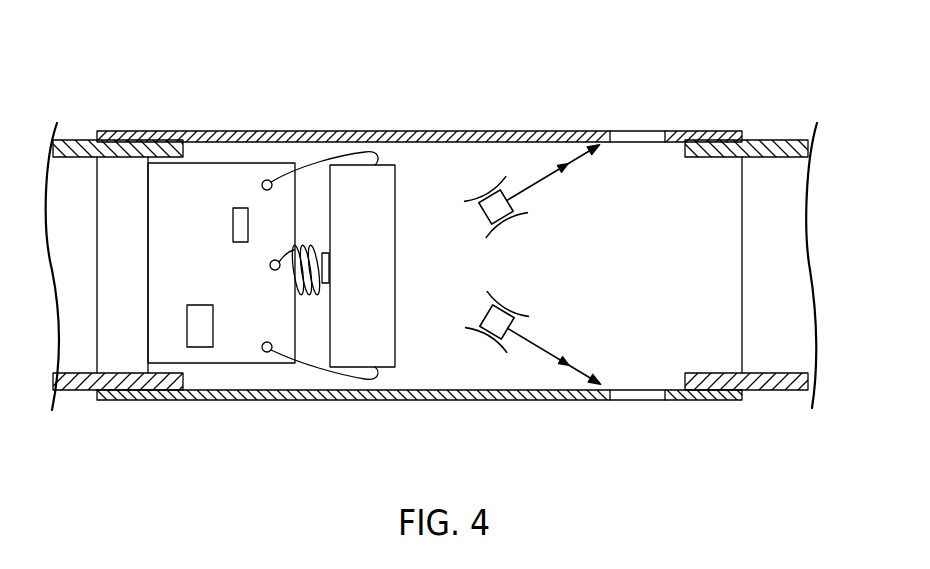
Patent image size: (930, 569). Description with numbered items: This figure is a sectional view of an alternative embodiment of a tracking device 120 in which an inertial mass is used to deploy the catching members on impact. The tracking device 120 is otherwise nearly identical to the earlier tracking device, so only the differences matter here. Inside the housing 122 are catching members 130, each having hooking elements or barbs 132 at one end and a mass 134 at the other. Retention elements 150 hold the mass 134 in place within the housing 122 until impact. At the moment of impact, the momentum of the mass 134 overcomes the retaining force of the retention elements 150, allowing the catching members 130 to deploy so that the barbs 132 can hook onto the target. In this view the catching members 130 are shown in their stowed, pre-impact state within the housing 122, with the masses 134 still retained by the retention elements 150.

The tracking device 120 is at (270, 93).
The housing 122 is at (262, 394).
The catching members 130 is at (538, 180).
The hooking elements or barbs 132 is at (567, 163).
The mass 134 is at (489, 196).
The retention elements 150 is at (507, 347).